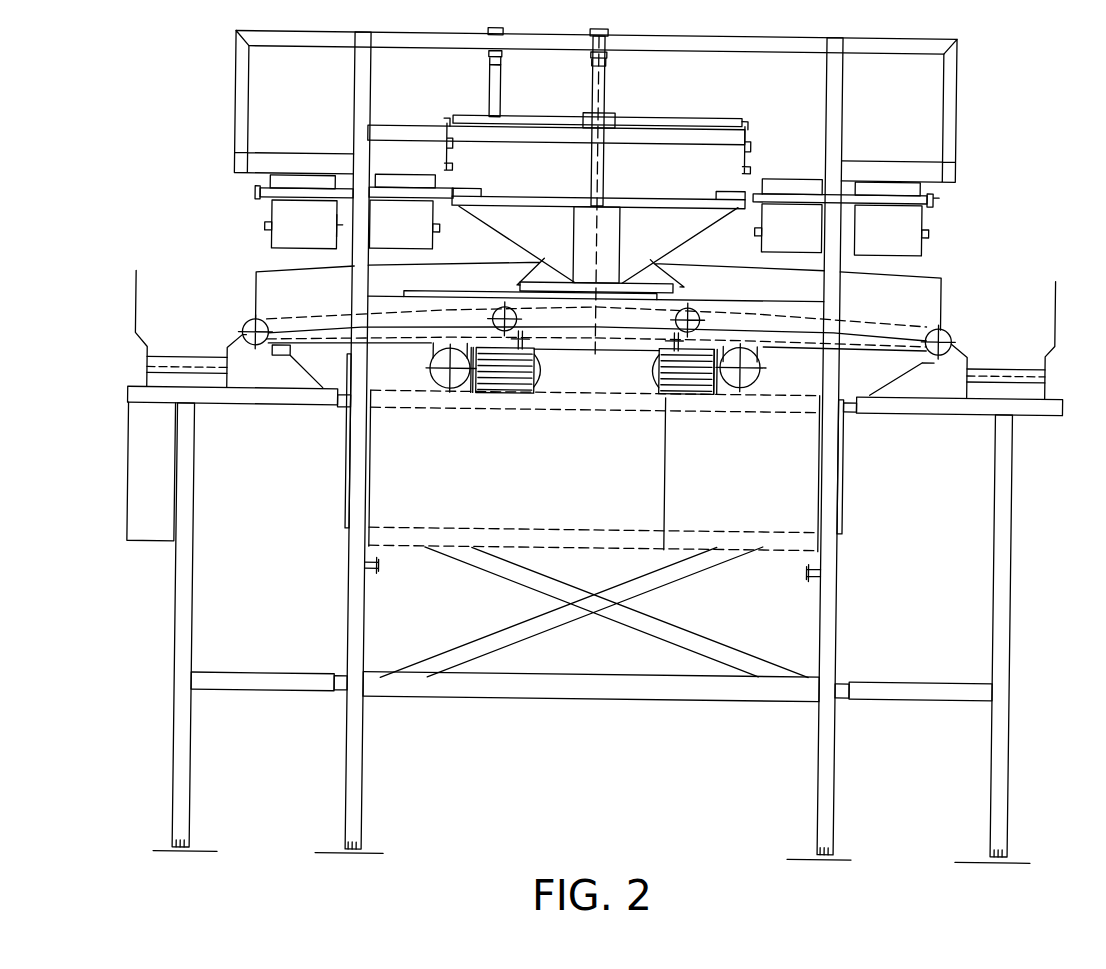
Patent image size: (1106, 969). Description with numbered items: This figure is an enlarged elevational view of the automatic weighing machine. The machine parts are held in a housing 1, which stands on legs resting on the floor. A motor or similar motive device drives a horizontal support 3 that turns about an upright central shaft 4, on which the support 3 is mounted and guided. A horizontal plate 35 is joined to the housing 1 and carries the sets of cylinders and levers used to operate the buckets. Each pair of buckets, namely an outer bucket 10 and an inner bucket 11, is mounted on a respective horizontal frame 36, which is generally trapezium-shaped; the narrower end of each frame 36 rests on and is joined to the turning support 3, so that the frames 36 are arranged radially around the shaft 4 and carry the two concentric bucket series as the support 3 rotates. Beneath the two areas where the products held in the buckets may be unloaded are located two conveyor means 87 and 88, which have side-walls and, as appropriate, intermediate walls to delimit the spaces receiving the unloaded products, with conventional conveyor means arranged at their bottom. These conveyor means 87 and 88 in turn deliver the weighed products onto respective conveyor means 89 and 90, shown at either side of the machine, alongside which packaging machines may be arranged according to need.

The housing 1 is at (231, 102).
The support 3 is at (634, 204).
The upright central shaft 4 is at (584, 167).
The outer bucket 10 is at (277, 216).
The inner bucket 11 is at (422, 217).
The horizontal plate 35 is at (524, 116).
The horizontal frame 36 is at (289, 197).
The conveyor means 87 is at (273, 276).
The conveyor means 88 is at (928, 271).
The conveyor means 89 is at (135, 318).
The conveyor means 90 is at (1053, 283).